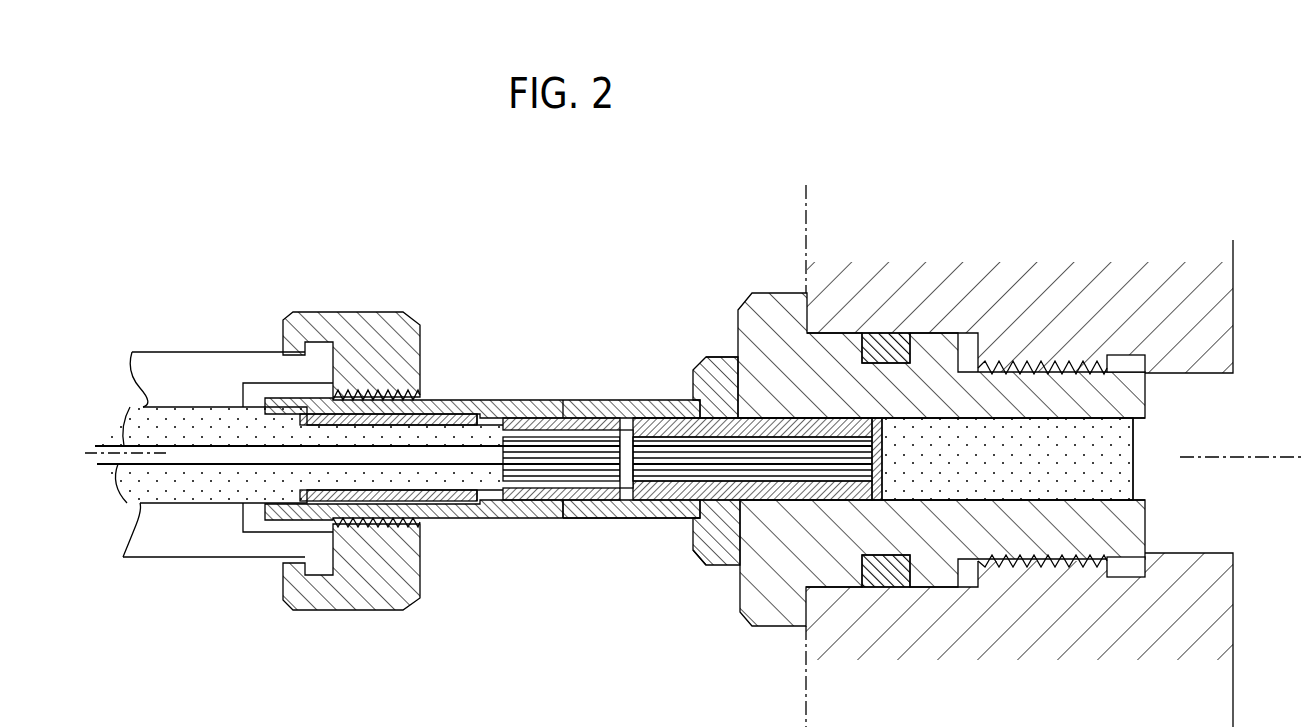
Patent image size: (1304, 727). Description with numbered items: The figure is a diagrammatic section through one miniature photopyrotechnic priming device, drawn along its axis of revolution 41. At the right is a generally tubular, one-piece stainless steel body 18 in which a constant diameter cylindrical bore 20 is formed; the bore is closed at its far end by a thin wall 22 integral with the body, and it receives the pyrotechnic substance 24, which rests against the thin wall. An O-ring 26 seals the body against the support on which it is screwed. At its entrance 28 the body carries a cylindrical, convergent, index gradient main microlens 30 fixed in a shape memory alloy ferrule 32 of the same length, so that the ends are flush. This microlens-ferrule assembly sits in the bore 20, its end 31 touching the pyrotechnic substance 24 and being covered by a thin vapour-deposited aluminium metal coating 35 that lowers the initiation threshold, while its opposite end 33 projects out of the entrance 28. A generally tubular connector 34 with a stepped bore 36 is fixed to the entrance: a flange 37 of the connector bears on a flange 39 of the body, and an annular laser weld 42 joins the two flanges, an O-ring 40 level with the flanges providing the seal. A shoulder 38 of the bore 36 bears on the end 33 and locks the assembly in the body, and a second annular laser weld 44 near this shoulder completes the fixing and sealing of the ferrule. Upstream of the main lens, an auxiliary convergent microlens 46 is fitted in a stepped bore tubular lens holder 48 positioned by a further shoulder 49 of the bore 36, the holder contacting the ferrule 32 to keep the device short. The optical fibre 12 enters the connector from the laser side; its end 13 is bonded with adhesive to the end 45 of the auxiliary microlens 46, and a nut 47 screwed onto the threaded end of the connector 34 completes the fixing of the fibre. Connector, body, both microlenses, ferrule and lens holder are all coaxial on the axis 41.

The optical fibre 12 is at (243, 458).
The end of the fibre 13 is at (492, 458).
The body 18 is at (933, 568).
The bore 20 is at (1067, 418).
The thin wall 22 is at (1145, 478).
The pyrotechnic substance 24 is at (1073, 470).
The O-ring 26 is at (893, 588).
The entrance 28 is at (703, 568).
The main microlens 30 is at (667, 402).
The end of the microlens-ferrule assembly 31 is at (883, 453).
The ferrule 32 is at (663, 415).
The end of the microlens-ferrule assembly 33 is at (603, 433).
The connector 34 is at (450, 530).
The metal coating 35 is at (903, 417).
The stepped bore 36 is at (412, 415).
The flange 37 is at (703, 353).
The shoulder 38 is at (612, 520).
The flange 39 is at (772, 615).
The O-ring 40 is at (745, 405).
The axis of revolution 41 is at (88, 452).
The annular laser weld 42 is at (707, 370).
The annular laser weld 44 is at (665, 505).
The end of the microlens 45 is at (477, 545).
The auxiliary convergent microlens 46 is at (583, 520).
The nut 47 is at (358, 316).
The lens holder 48 is at (372, 492).
The shoulder 49 is at (552, 518).